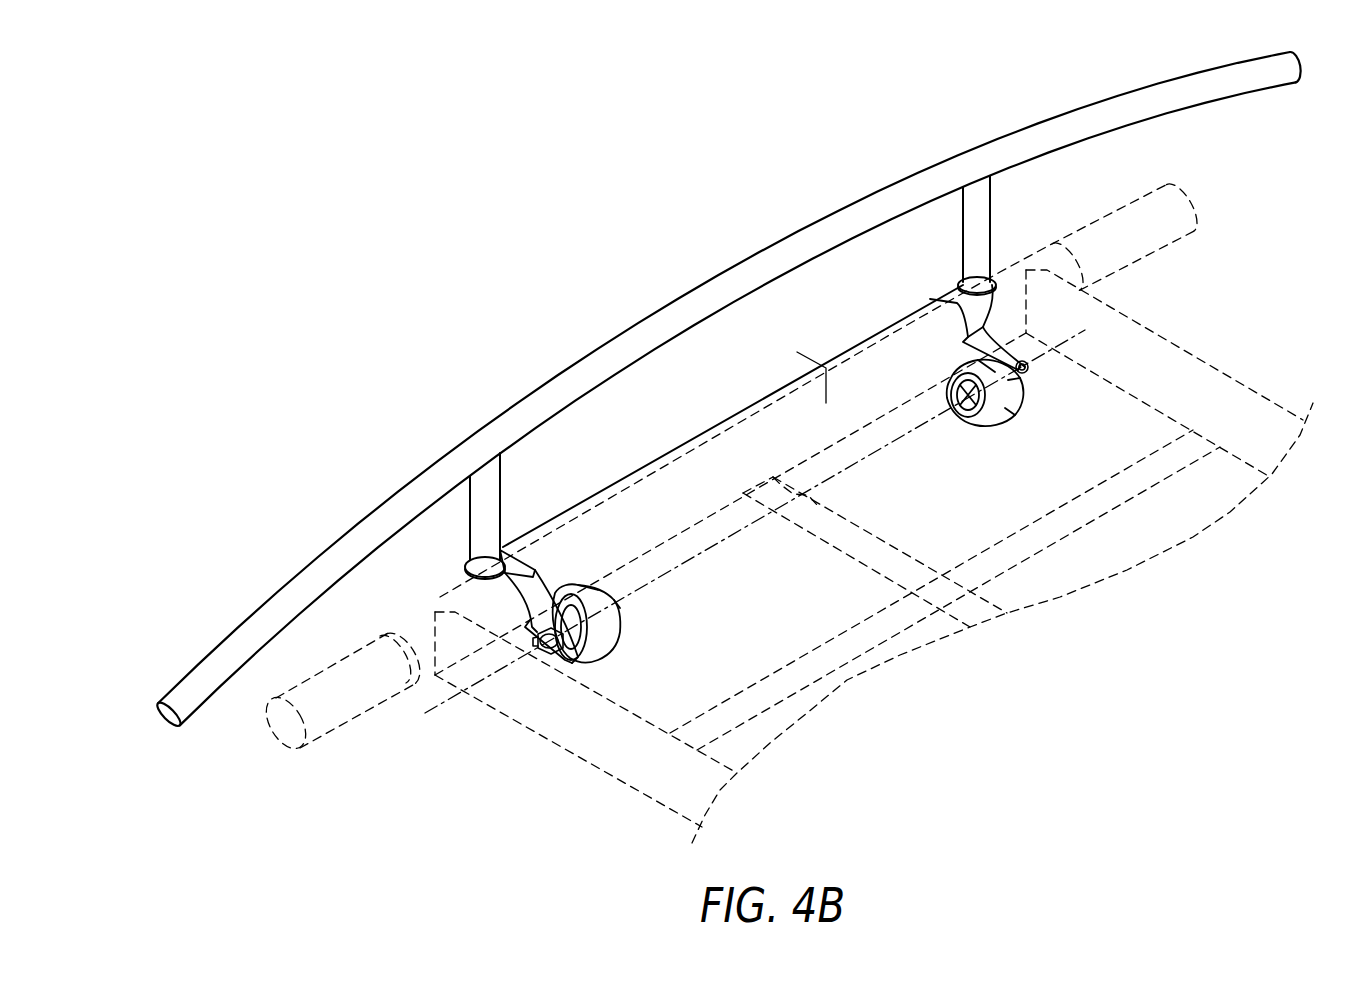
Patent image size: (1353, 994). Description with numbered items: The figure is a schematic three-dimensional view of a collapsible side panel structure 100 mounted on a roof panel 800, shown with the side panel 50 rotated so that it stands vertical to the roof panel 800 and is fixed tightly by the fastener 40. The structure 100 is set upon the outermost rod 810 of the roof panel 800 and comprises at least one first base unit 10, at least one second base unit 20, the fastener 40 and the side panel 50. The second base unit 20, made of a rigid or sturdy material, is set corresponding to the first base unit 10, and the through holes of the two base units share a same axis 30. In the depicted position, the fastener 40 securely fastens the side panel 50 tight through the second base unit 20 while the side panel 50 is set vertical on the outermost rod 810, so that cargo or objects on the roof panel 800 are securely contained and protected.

The collapsible side panel structure 100 is at (1073, 130).
The side panel 50 is at (598, 417).
The first base unit 10 is at (1025, 372).
The second base unit 20 is at (1005, 316).
The axis 30 is at (733, 537).
The fastener 40 is at (1008, 405).
The roof panel 800 is at (643, 797).
The outermost rod 810 is at (327, 717).